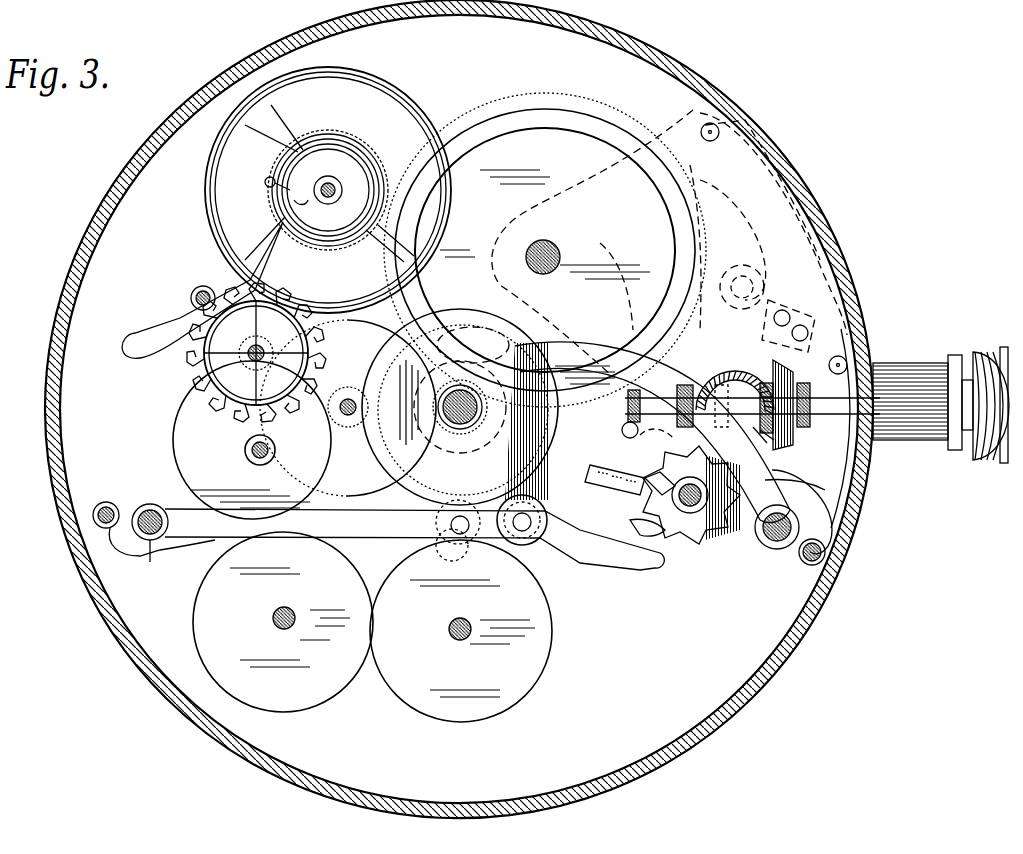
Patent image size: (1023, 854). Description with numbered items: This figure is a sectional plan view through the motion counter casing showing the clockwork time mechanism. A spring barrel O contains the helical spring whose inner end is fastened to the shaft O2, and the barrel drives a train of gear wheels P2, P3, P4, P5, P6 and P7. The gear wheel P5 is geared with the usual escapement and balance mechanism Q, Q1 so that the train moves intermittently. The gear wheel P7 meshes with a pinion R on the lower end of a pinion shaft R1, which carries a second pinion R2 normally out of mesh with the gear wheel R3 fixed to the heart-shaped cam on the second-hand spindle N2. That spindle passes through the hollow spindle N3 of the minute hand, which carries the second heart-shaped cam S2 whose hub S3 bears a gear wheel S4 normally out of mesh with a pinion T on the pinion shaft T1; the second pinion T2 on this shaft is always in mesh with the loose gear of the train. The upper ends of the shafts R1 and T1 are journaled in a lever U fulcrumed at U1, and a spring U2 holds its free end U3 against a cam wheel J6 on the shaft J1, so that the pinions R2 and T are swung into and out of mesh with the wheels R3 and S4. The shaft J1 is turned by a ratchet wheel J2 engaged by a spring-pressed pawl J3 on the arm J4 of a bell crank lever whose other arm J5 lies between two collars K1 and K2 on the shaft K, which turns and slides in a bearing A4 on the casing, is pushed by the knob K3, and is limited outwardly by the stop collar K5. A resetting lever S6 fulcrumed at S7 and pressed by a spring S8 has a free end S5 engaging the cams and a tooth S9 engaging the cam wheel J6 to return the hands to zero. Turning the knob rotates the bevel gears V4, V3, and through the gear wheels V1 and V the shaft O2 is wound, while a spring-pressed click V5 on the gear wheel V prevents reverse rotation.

The balance mechanism Q1 is at (219, 217).
The escapement mechanism Q is at (196, 366).
The spring barrel O is at (566, 142).
The shaft O2 is at (493, 122).
The gear wheel V is at (541, 94).
The gear wheel V1 is at (727, 340).
The bevel gear wheel V3 is at (735, 388).
The bevel gear wheel V4 is at (800, 435).
The spring-pressed pawl or click V5 is at (735, 205).
The gear wheel P2 is at (346, 398).
The gear wheel P3 is at (311, 470).
The gear wheel P4 is at (251, 450).
The gear wheel P5 is at (184, 443).
The gear wheel P6 is at (321, 694).
The gear wheel P7 is at (532, 651).
The pinion R is at (444, 540).
The pinion shaft R1 is at (450, 524).
The second pinion R2 is at (471, 547).
The gear wheel R3 is at (348, 408).
The second heart-shaped cam S2 is at (460, 407).
The hub S3 is at (463, 410).
The gear wheel S4 is at (390, 493).
The free end of resetting lever S5 is at (474, 343).
The resetting lever S6 is at (618, 350).
The fulcrum S7 is at (780, 541).
The spring S8 is at (805, 500).
The tooth S9 is at (792, 485).
The shaft or spindle N2 is at (460, 422).
The hollow shaft or spindle N3 is at (452, 400).
The pinion T is at (509, 541).
The pinion shaft T1 is at (532, 520).
The second pinion T2 is at (530, 512).
The lever U is at (376, 527).
The fulcrum U1 is at (150, 545).
The spring U2 is at (196, 546).
The free end of lever U3 is at (661, 554).
The shaft K is at (818, 400).
The collar K1 is at (686, 400).
The collar K2 is at (762, 405).
The knob K3 is at (988, 364).
The stop collar K5 is at (857, 392).
The bearing A4 is at (908, 434).
The shaft J1 is at (684, 546).
The ratchet wheel J2 is at (640, 522).
The spring-pressed pawl J3 is at (620, 486).
The arm of bell crank lever J4 is at (606, 465).
The arm of bell crank lever J5 is at (648, 429).
The cam wheel J6 is at (736, 538).